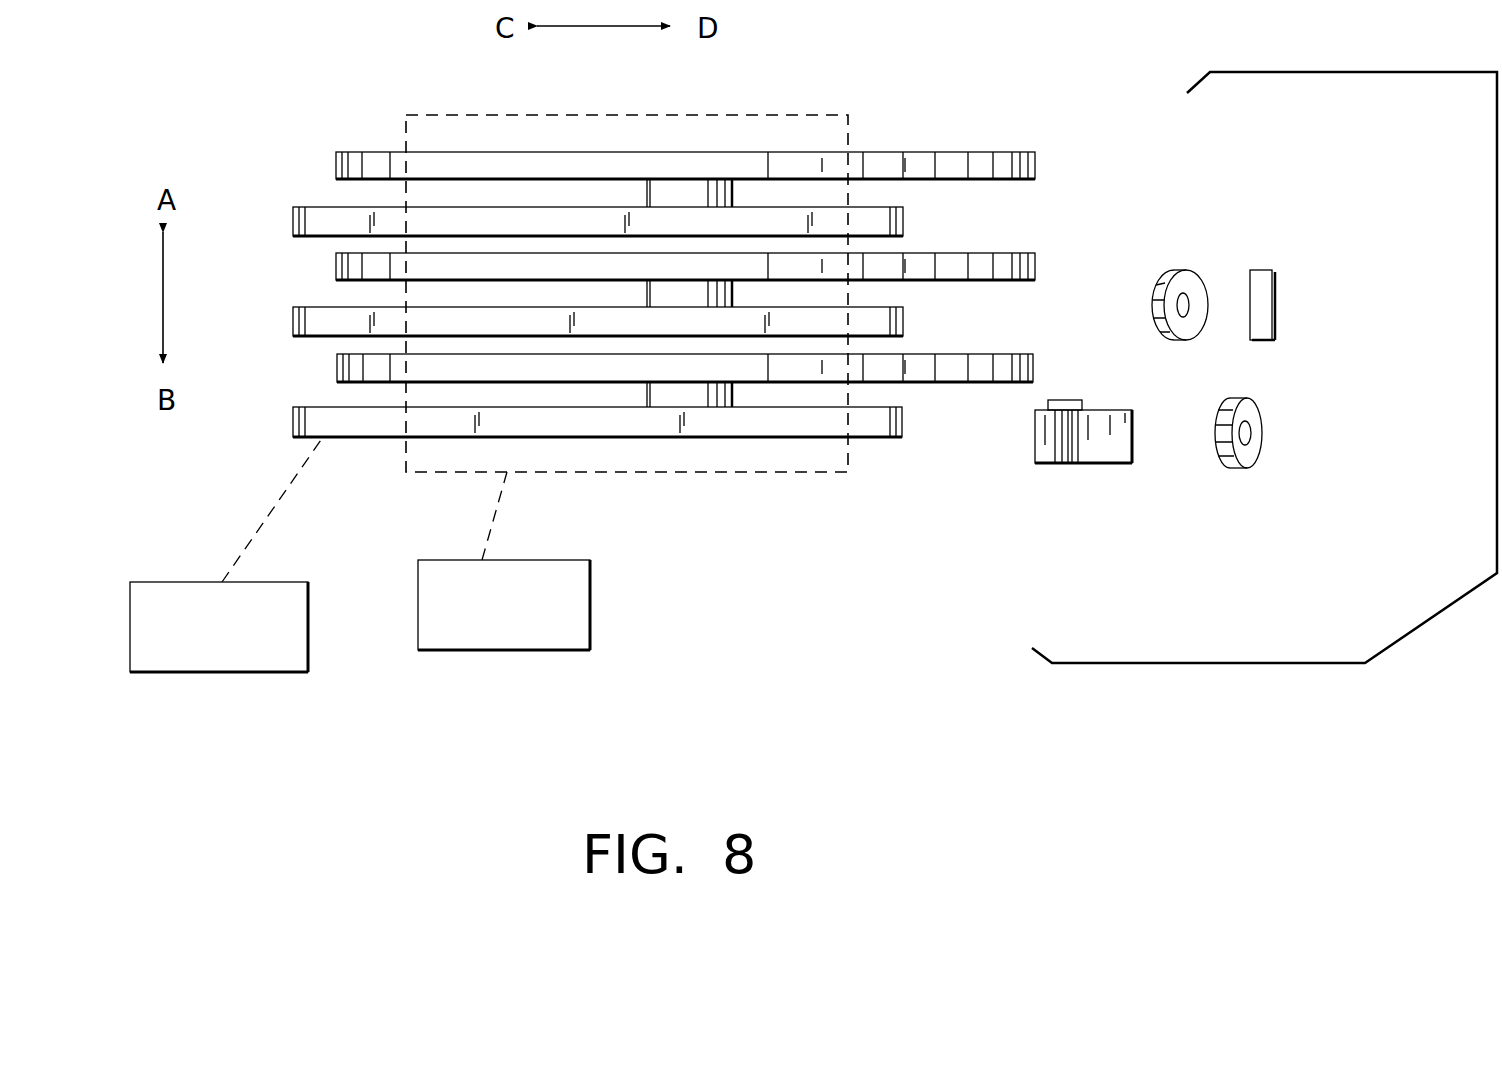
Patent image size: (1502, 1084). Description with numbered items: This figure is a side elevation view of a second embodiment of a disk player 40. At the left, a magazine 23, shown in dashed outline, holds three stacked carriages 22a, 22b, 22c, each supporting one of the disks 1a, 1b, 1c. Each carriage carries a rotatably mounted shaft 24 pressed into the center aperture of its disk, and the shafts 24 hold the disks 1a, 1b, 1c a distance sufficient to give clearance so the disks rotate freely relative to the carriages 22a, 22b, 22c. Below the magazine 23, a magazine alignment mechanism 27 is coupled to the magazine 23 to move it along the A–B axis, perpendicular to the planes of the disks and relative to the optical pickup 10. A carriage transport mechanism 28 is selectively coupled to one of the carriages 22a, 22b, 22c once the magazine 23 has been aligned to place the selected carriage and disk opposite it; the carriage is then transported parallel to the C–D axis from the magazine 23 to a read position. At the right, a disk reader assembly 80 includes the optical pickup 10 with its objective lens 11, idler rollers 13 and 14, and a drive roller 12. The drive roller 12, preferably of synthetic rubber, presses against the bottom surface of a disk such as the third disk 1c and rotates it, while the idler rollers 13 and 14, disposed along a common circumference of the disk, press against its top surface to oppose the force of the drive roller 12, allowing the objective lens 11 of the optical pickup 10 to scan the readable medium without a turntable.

The first disk 1a is at (378, 152).
The second disk 1b is at (953, 282).
The third disk 1c is at (1013, 382).
The first carriage 22a is at (303, 205).
The second carriage 22b is at (293, 325).
The third carriage 22c is at (290, 420).
The magazine 23 is at (790, 470).
The shaft 24 is at (692, 188).
The magazine alignment mechanism 27 is at (504, 561).
The carriage transport mechanism 28 is at (226, 554).
The optical pickup 10 is at (1052, 463).
The objective lens 11 is at (1065, 400).
The drive roller 12 is at (1252, 458).
The idler roller 13 is at (1186, 278).
The idler roller 14 is at (1262, 275).
The disk player 40 is at (912, 632).
The disk reader assembly 80 is at (1413, 630).